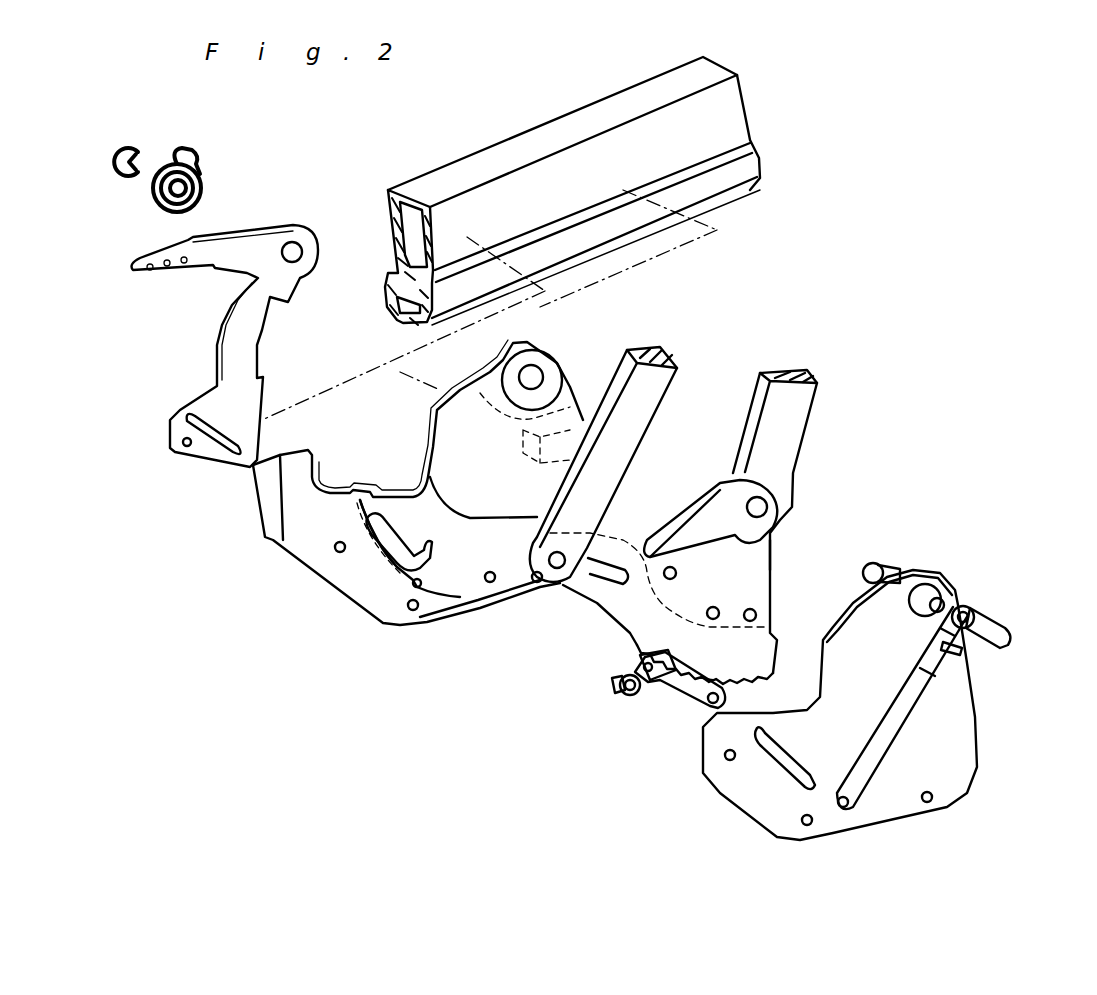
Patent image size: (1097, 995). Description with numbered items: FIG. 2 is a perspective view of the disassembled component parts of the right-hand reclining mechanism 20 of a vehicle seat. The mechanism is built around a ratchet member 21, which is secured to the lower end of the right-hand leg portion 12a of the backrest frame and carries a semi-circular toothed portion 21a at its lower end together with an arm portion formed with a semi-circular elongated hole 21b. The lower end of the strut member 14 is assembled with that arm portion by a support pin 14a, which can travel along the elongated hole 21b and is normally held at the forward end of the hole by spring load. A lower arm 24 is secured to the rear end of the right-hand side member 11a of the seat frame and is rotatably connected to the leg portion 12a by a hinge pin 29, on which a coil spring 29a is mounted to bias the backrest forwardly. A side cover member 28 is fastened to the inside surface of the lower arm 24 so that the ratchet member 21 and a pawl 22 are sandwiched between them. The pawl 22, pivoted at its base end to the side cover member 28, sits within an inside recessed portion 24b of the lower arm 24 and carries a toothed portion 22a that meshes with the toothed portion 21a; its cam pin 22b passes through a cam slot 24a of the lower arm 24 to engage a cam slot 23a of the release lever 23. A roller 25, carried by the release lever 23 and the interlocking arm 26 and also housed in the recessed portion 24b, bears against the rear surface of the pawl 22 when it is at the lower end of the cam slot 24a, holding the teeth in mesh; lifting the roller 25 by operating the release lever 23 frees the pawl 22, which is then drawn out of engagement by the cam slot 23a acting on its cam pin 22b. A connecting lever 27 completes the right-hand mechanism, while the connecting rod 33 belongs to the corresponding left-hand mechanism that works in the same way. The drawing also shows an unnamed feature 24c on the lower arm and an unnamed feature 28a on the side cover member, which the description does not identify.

The right-hand side member 11a is at (465, 167).
The right-hand leg portion 12a is at (805, 400).
The strut member 14 is at (689, 352).
The support pin 14a is at (556, 568).
The right-hand reclining mechanism 20 is at (866, 445).
The ratchet member 21 is at (786, 586).
The semi-circular toothed portion 21a is at (710, 690).
The semi-circular elongated hole 21b is at (622, 550).
The pawl 22 is at (674, 722).
The toothed portion 22a is at (652, 705).
The cam pin 22b is at (636, 665).
The release lever 23 is at (257, 220).
The cam slot 23a is at (213, 462).
The lower arm 24 is at (266, 556).
The cam slot 24a is at (383, 517).
The inside recessed portion 24b is at (495, 556).
The curved cutout 24c is at (420, 580).
The roller 25 is at (610, 697).
The interlocking arm 26 is at (943, 693).
The connecting lever 27 is at (982, 598).
The side cover member 28 is at (993, 728).
The guide slot 28a is at (780, 757).
The hinge pin 29 is at (890, 555).
The coil spring 29a is at (196, 180).
The connecting rod 33 is at (1012, 614).